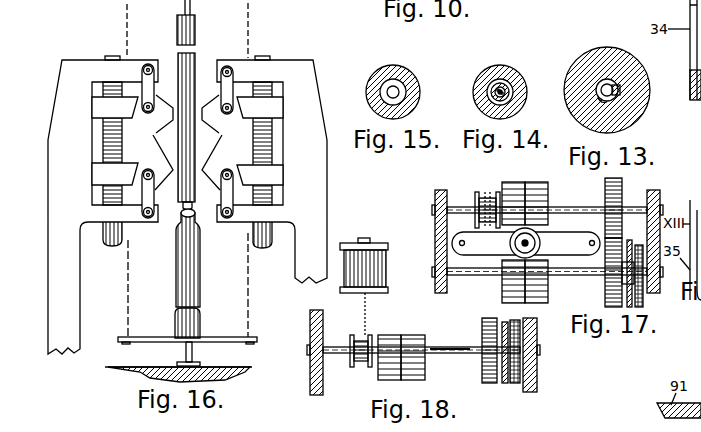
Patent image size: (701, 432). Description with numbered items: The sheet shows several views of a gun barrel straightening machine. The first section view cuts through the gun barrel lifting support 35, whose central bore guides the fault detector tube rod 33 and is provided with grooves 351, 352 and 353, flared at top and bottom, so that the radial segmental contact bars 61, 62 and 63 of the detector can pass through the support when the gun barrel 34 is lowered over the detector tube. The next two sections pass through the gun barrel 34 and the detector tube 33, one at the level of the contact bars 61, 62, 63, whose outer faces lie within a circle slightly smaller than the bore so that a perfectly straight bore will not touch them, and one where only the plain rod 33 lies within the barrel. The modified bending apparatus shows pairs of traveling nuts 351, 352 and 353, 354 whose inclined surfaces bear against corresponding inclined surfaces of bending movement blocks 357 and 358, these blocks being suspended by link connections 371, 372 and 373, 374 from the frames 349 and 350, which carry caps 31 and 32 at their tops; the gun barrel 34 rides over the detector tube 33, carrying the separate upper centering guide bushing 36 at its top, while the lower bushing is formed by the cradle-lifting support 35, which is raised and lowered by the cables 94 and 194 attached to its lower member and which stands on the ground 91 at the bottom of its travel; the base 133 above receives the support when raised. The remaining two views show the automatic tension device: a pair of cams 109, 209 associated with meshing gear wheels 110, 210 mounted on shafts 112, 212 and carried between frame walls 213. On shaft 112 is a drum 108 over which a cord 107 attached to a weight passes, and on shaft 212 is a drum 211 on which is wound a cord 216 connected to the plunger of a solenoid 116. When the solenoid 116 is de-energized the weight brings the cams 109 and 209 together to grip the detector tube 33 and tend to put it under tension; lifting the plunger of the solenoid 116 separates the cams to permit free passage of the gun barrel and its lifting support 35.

In FIG. 16, the base 133 is at (26, 10).
In FIG. 16, the cap bracket on right frame 31 is at (262, 58).
In FIG. 16, the cap bracket on left frame 32 is at (105, 57).
In FIG. 16, the fault detector tube rod 33 is at (194, 357).
In FIG. 15, the fault detector tube rod 33 is at (414, 88).
In FIG. 14, the fault detector tube rod 33 is at (490, 93).
In FIG. 13, the fault detector tube rod 33 is at (616, 86).
In FIG. 16, the gun barrel 34 is at (188, 74).
In FIG. 15, the gun barrel 34 is at (380, 72).
In FIG. 14, the gun barrel 34 is at (492, 76).
In FIG. 16, the cradle-lifting support 35 is at (200, 330).
In FIG. 13, the cradle-lifting support 35 is at (600, 64).
In FIG. 17, the cradle-lifting support 35 is at (540, 240).
In FIG. 16, the upper centering guide bushing 36 is at (193, 14).
In FIG. 14, the radial segmental contact bar 61 is at (512, 82).
In FIG. 14, the radial segmental contact bar 62 is at (514, 86).
In FIG. 14, the radial segmental contact bar 63 is at (513, 92).
In FIG. 16, the ground / base 91 is at (130, 368).
In FIG. 16, the lifting cable 94 is at (248, 30).
In FIG. 17, the lifting cable 94 is at (584, 243).
In FIG. 17, the cord 107 is at (630, 246).
In FIG. 18, the cord 107 is at (512, 385).
In FIG. 17, the drum 108 is at (641, 298).
In FIG. 18, the drum 108 is at (507, 324).
In FIG. 17, the cam 109 is at (505, 290).
In FIG. 17, the gear wheel 110 is at (612, 292).
In FIG. 18, the gear wheel 110 is at (482, 326).
In FIG. 17, the shaft 112 is at (596, 275).
In FIG. 18, the shaft 112 is at (436, 352).
In FIG. 18, the solenoid 116 is at (380, 252).
In FIG. 16, the lifting cable 194 is at (127, 30).
In FIG. 17, the lifting cable 194 is at (526, 243).
In FIG. 17, the cam 209 is at (536, 195).
In FIG. 18, the cam 209 is at (395, 339).
In FIG. 17, the gear wheel 210 is at (618, 193).
In FIG. 17, the drum 211 is at (477, 205).
In FIG. 18, the drum 211 is at (358, 366).
In FIG. 17, the shaft 212 is at (556, 208).
In FIG. 18, the shaft 212 is at (430, 356).
In FIG. 17, the frame wall 213 is at (434, 242).
In FIG. 18, the frame wall 213 is at (311, 336).
In FIG. 17, the cord 216 is at (488, 193).
In FIG. 18, the cord 216 is at (367, 322).
In FIG. 16, the frame 349 is at (322, 212).
In FIG. 16, the frame 350 is at (65, 211).
In FIG. 16, the traveling nut 351 is at (270, 172).
In FIG. 13, the traveling nut 351 is at (602, 84).
In FIG. 16, the traveling nut 352 is at (270, 108).
In FIG. 13, the traveling nut 352 is at (601, 103).
In FIG. 16, the traveling nut 353 is at (110, 172).
In FIG. 13, the traveling nut 353 is at (621, 91).
In FIG. 16, the traveling nut 354 is at (110, 107).
In FIG. 16, the bending movement block 357 is at (245, 140).
In FIG. 16, the bending movement block 358 is at (135, 140).
In FIG. 16, the link connection 371 is at (232, 72).
In FIG. 16, the link connection 372 is at (232, 212).
In FIG. 16, the link connection 373 is at (143, 70).
In FIG. 16, the link connection 374 is at (143, 212).